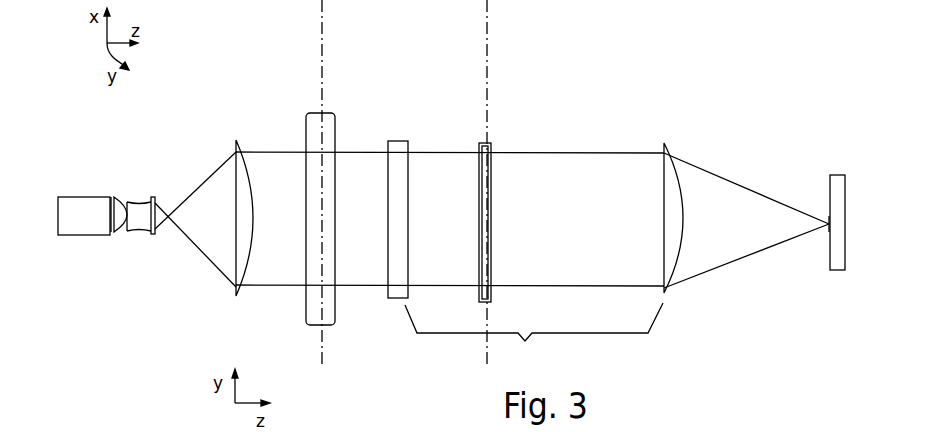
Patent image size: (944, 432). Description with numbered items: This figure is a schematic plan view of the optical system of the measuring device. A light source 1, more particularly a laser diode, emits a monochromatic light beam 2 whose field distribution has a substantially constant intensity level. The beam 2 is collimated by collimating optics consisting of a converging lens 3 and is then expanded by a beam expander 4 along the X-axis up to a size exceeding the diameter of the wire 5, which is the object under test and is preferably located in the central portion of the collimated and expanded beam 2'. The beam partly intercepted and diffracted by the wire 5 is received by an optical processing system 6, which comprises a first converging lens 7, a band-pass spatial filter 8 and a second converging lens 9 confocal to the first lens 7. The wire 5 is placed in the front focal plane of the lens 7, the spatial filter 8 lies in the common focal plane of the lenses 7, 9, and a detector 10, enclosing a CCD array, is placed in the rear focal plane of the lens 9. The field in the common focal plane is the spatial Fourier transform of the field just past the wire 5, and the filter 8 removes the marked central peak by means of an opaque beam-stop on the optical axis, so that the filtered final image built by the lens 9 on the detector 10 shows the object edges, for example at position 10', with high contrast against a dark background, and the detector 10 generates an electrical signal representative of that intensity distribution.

The light source 1 is at (82, 205).
The monochromatic light beam 2 is at (127, 184).
The converging lens 3 is at (117, 235).
The beam expander 4 is at (233, 126).
The collimated and expanded beam 2' is at (254, 244).
The wire 5 is at (328, 312).
The optical processing system 6 is at (534, 338).
The first converging lens 7 is at (397, 140).
The band-pass spatial filter 8 is at (489, 143).
The second converging lens 9 is at (663, 150).
The detector 10 is at (820, 220).
The object edge position 10' is at (770, 273).